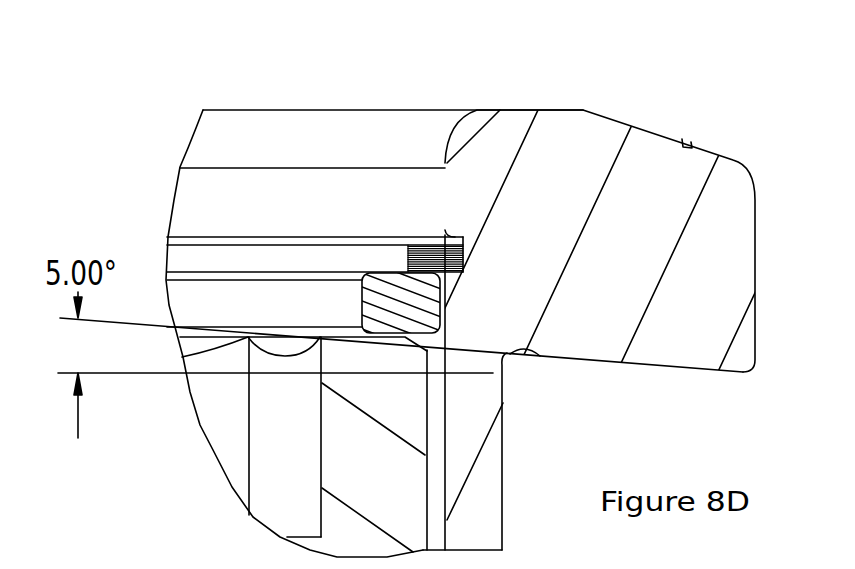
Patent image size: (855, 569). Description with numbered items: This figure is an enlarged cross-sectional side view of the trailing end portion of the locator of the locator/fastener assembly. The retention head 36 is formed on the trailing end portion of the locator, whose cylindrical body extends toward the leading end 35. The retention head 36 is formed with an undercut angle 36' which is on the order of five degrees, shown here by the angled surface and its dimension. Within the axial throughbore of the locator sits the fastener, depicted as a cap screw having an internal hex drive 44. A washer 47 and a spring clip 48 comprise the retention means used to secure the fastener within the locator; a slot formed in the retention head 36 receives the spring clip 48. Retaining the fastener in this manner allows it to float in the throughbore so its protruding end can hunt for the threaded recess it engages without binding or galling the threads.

The leading end 35 is at (447, 163).
The retention head 36 is at (624, 250).
The undercut angle 36' is at (401, 378).
The internal hex drive 44 is at (303, 463).
The washer 47 is at (253, 300).
The spring clip 48 is at (322, 242).